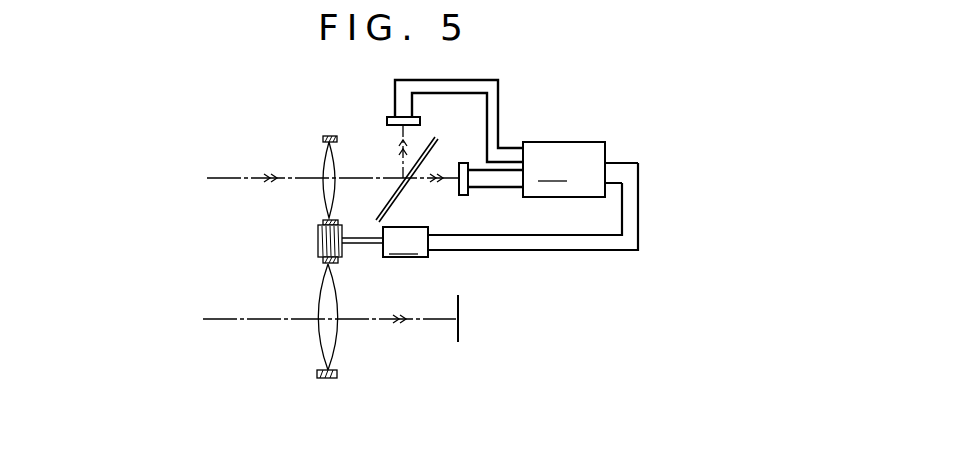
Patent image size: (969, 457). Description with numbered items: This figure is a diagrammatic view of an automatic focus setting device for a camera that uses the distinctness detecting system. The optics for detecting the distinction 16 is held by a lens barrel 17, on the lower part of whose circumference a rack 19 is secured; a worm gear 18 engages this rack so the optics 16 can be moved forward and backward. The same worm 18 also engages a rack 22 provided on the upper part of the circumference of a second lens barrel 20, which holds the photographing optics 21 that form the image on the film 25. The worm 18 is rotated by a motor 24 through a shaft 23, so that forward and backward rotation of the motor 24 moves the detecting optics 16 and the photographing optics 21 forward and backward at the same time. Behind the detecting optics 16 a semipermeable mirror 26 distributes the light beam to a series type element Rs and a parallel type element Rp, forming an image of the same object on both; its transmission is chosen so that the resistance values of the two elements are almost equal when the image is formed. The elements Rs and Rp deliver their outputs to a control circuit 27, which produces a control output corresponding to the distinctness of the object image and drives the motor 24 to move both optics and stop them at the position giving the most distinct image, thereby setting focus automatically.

The optics for detecting the distinction 16 is at (325, 172).
The lens barrel 17 is at (330, 136).
The worm gear 18 is at (318, 241).
The rack 19 is at (322, 222).
The lens barrel 20 is at (335, 378).
The photographing optics 21 is at (328, 339).
The rack 22 is at (342, 259).
The shaft 23 is at (367, 244).
The motor 24 is at (510, 210).
The film 25 is at (461, 328).
The semipermeable mirror 26 is at (393, 201).
The control circuit 27 is at (580, 169).
The parallel type element Rp is at (388, 120).
The series type element Rs is at (461, 196).